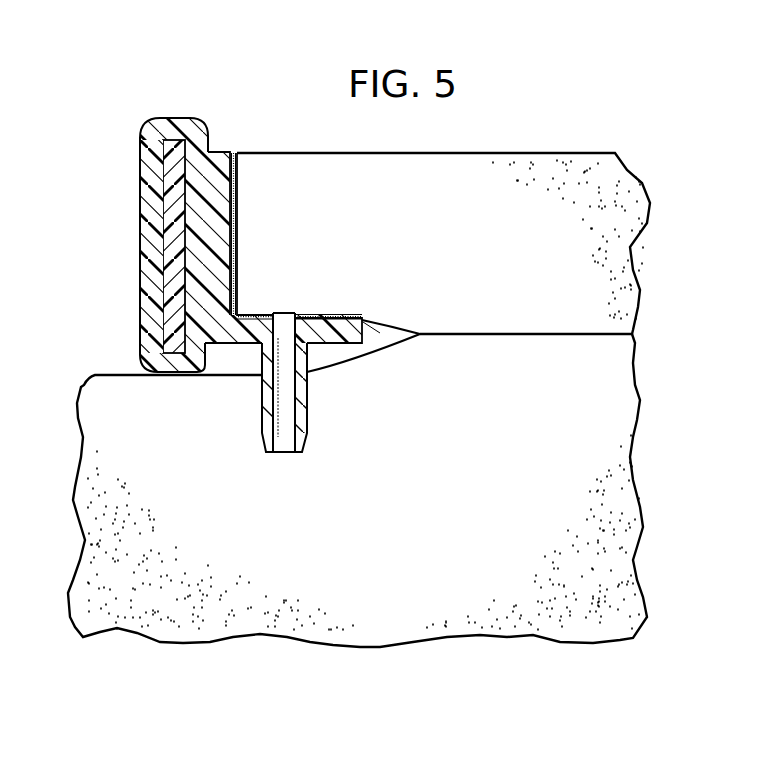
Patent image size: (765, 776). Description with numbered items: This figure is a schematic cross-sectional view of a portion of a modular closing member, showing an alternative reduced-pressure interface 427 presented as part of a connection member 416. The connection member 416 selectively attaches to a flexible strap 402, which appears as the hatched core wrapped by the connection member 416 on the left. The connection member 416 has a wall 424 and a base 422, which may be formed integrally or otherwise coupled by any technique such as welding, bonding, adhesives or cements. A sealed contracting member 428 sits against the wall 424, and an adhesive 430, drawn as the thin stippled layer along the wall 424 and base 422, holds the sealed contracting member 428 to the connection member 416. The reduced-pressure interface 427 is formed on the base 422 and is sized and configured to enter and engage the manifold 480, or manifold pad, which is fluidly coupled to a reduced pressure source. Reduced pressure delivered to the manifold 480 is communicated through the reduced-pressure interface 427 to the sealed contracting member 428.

The flexible strap 402 is at (172, 247).
The connection member 416 is at (171, 118).
The base 422 is at (362, 330).
The wall 424 is at (206, 223).
The reduced-pressure interface 427 is at (262, 406).
The sealed contracting member 428 is at (437, 252).
The adhesive 430 is at (233, 151).
The manifold 480 is at (443, 500).